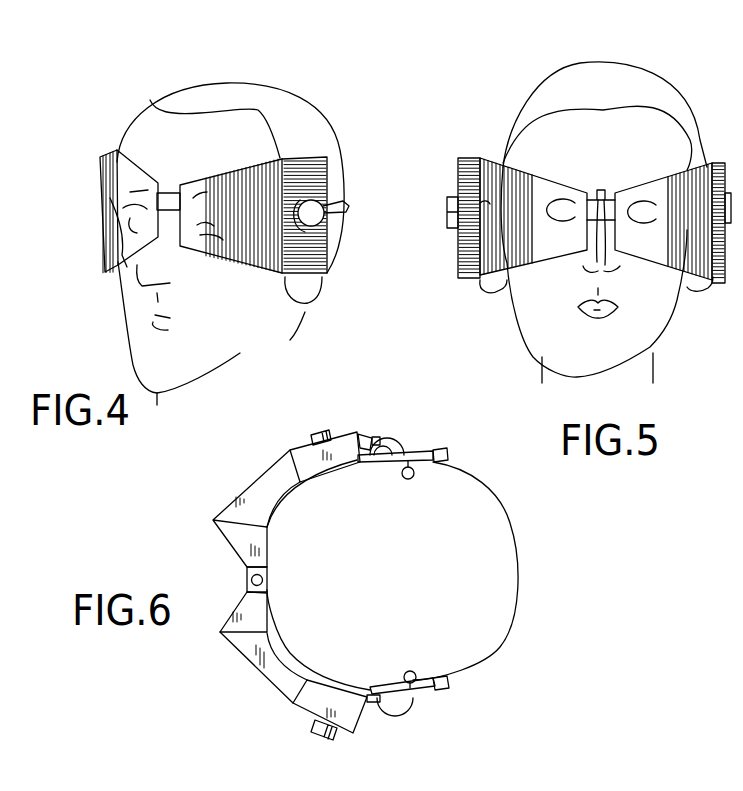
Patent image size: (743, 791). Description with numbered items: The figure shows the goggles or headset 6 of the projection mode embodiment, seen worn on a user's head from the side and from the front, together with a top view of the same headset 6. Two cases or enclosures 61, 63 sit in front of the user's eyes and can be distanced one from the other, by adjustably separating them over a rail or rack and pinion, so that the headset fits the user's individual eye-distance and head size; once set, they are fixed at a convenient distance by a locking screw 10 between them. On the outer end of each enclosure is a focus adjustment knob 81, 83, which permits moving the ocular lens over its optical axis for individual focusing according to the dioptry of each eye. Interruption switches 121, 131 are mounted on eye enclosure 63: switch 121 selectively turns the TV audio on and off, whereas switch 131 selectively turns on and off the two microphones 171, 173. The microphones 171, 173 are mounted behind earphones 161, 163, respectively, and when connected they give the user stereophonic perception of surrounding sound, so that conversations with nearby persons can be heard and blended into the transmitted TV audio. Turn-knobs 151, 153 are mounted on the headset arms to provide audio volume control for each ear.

In FIG. 6, the headset or goggles 6 is at (290, 664).
In FIG. 4, the locking screw 10 is at (166, 192).
In FIG. 5, the locking screw 10 is at (601, 190).
In FIG. 6, the locking screw 10 is at (263, 578).
In FIG. 4, the case or enclosure 61 is at (252, 273).
In FIG. 5, the case or enclosure 61 is at (711, 190).
In FIG. 6, the case or enclosure 61 is at (247, 662).
In FIG. 4, the case or enclosure 63 is at (100, 165).
In FIG. 5, the case or enclosure 63 is at (470, 157).
In FIG. 6, the case or enclosure 63 is at (232, 503).
In FIG. 4, the focus adjustment knob 81 is at (309, 199).
In FIG. 5, the focus adjustment knob 81 is at (712, 195).
In FIG. 6, the focus adjustment knob 81 is at (313, 724).
In FIG. 5, the focus adjustment knob 83 is at (447, 229).
In FIG. 6, the focus adjustment knob 83 is at (327, 430).
In FIG. 6, the interruption switch 121 is at (363, 436).
In FIG. 6, the interruption switch 131 is at (378, 438).
In FIG. 6, the turn-knob 151 is at (407, 703).
In FIG. 6, the turn-knob 153 is at (390, 465).
In FIG. 6, the earphone 161 is at (440, 644).
In FIG. 6, the earphone 163 is at (412, 479).
In FIG. 6, the microphone 171 is at (448, 686).
In FIG. 6, the microphone 173 is at (446, 450).